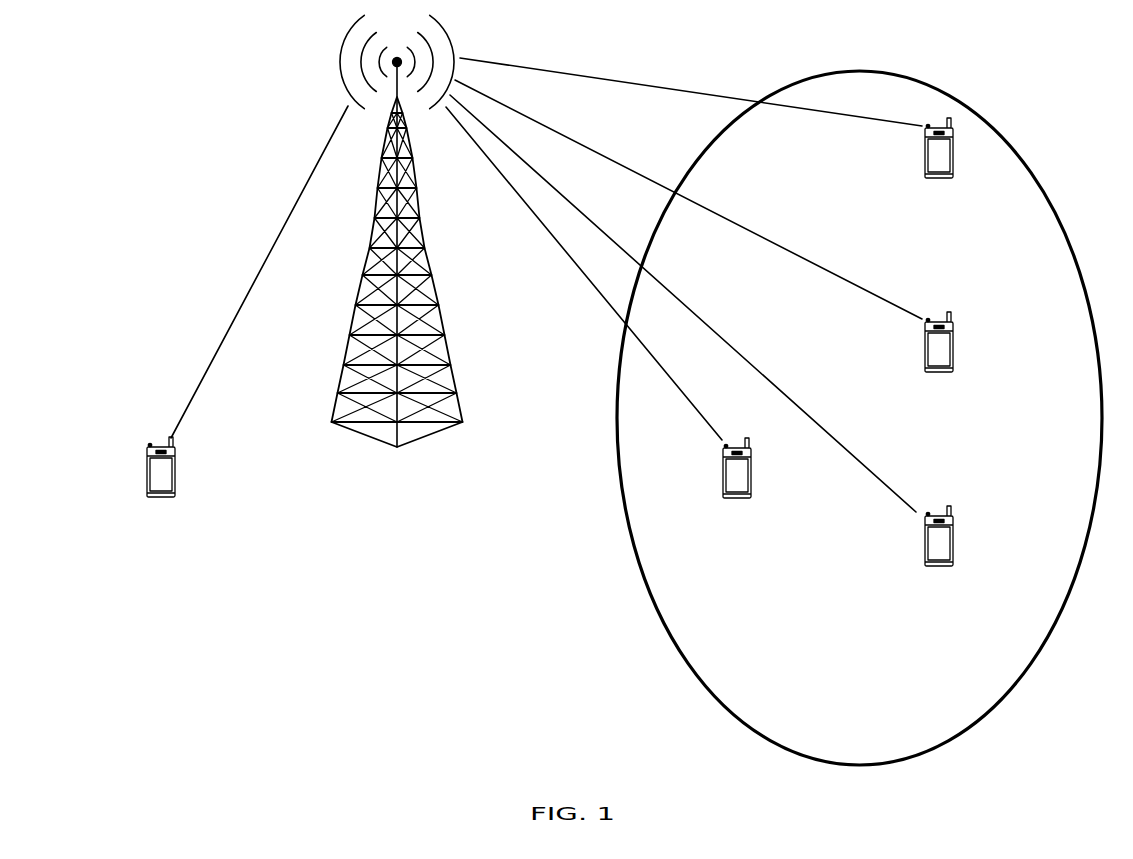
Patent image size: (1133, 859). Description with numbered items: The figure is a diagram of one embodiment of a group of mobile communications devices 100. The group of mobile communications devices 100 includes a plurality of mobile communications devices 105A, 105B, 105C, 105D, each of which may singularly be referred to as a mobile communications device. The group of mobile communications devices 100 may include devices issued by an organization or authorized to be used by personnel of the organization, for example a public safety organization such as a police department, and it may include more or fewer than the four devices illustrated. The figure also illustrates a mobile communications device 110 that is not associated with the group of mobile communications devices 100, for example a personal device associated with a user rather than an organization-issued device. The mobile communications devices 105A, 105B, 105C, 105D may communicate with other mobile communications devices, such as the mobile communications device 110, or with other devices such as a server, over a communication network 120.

The group of mobile communications devices 100 is at (665, 623).
The mobile communications device 105A is at (941, 566).
The mobile communications device 105B is at (739, 498).
The mobile communications device 105C is at (941, 372).
The mobile communications device 105D is at (941, 178).
The mobile communications device 110 is at (163, 498).
The communication network 120 is at (397, 447).